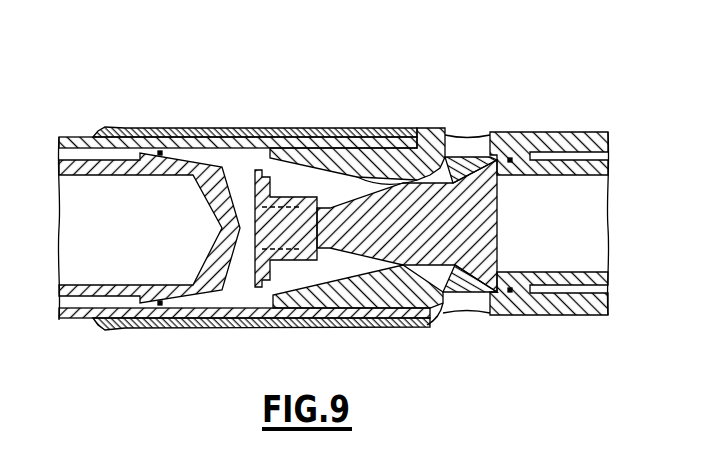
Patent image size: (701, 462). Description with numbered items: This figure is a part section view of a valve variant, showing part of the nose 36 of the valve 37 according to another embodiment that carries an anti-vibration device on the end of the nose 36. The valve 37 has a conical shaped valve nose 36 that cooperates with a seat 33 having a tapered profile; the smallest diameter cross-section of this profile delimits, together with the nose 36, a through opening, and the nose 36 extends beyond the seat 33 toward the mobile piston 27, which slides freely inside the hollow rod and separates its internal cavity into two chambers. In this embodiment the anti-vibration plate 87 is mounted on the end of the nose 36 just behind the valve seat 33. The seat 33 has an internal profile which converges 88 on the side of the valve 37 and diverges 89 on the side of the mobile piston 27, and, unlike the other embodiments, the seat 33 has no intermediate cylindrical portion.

The mobile piston 27 is at (77, 148).
The seat 33 is at (332, 142).
The valve nose 36 is at (420, 228).
The valve 37 is at (550, 150).
The anti-vibration plate 87 is at (264, 170).
The converging portion of the seat profile 88 is at (460, 160).
The diverging portion of the seat profile 89 is at (360, 178).